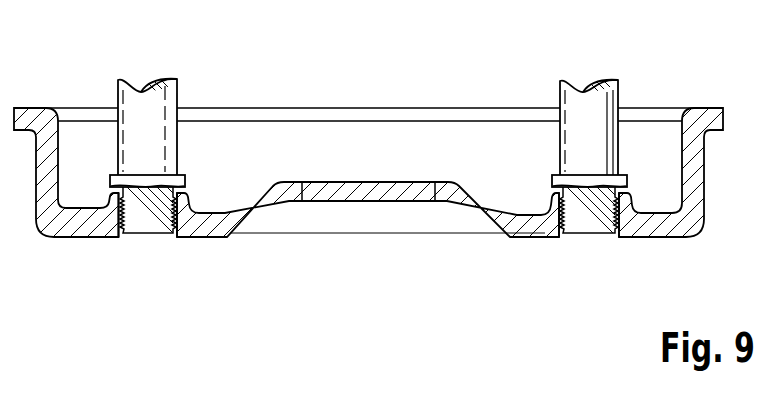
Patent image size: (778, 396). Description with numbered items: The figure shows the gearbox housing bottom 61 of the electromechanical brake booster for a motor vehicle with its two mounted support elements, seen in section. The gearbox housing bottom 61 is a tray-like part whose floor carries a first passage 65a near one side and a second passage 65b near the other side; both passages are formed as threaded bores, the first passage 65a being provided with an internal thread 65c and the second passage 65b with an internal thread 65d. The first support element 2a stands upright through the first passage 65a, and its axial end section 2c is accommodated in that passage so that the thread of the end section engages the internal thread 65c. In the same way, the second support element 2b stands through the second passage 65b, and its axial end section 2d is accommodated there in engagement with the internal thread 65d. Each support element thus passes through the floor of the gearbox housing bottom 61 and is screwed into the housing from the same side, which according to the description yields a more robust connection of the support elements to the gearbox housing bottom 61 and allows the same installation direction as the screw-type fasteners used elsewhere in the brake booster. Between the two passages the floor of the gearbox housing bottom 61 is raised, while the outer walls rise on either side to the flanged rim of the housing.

The first support element 2a is at (179, 103).
The second support element 2b is at (559, 105).
The axial end section of first support element 2c is at (160, 147).
The axial end section of second support element 2d is at (575, 162).
The gearbox housing bottom 61 is at (255, 208).
The first passage 65a is at (115, 217).
The second passage 65b is at (562, 217).
The internal thread 65c is at (128, 216).
The internal thread 65d is at (576, 217).